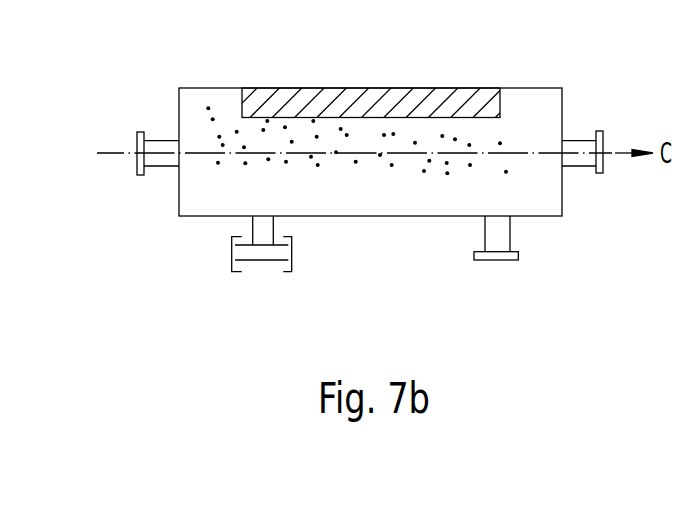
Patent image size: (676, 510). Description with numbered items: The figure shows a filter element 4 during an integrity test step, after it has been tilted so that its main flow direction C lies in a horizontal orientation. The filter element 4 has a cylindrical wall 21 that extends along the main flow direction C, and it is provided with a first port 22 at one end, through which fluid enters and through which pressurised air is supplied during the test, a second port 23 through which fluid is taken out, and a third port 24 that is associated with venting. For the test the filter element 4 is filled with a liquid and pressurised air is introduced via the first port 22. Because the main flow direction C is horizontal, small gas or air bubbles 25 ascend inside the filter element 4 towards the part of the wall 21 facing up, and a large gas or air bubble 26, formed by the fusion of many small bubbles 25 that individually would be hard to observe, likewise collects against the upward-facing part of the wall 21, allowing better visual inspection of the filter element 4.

The filter element 4 is at (423, 55).
The cylindrical wall 21 is at (522, 88).
The first port 22 is at (140, 132).
The second port 23 is at (510, 238).
The third port 24 is at (584, 138).
The small gas or air bubbles 25 is at (208, 106).
The large gas or air bubble 26 is at (350, 97).